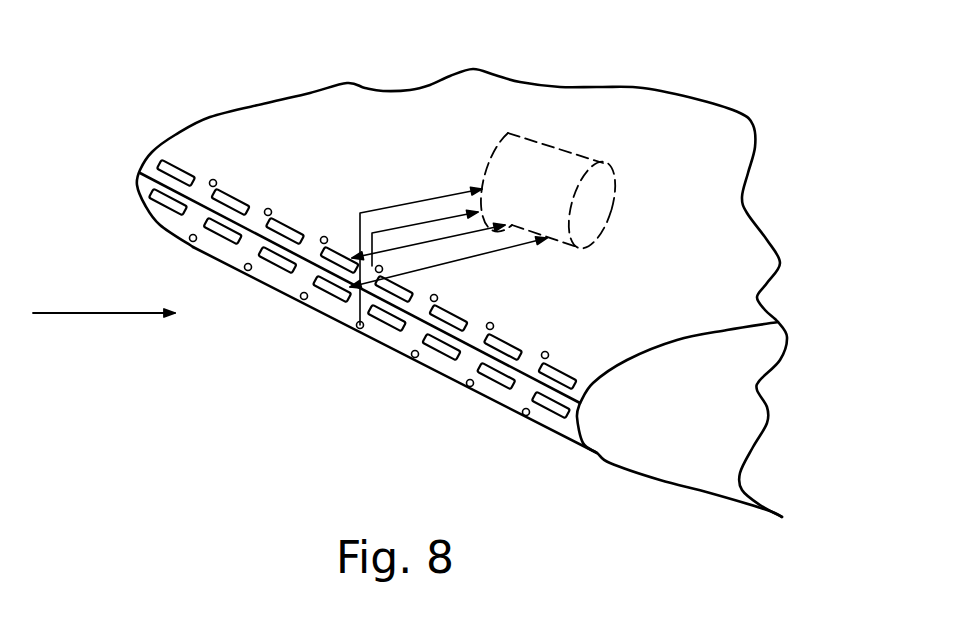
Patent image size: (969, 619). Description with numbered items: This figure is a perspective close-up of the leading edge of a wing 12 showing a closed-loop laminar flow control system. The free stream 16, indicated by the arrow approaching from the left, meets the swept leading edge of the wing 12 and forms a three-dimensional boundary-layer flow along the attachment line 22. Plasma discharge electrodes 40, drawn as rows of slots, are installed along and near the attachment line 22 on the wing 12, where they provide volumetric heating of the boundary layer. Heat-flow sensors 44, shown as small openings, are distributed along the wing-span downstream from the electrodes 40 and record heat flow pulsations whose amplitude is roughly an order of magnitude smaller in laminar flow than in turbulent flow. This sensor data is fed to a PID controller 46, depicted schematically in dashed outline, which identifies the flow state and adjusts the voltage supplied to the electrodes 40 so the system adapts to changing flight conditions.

The wing 12 is at (290, 122).
The attachment line 22 is at (152, 175).
The plasma discharge electrodes 40 is at (388, 327).
The heat-flow sensors 44 is at (319, 234).
The PID controller 46 is at (613, 193).
The free stream 16 is at (81, 311).